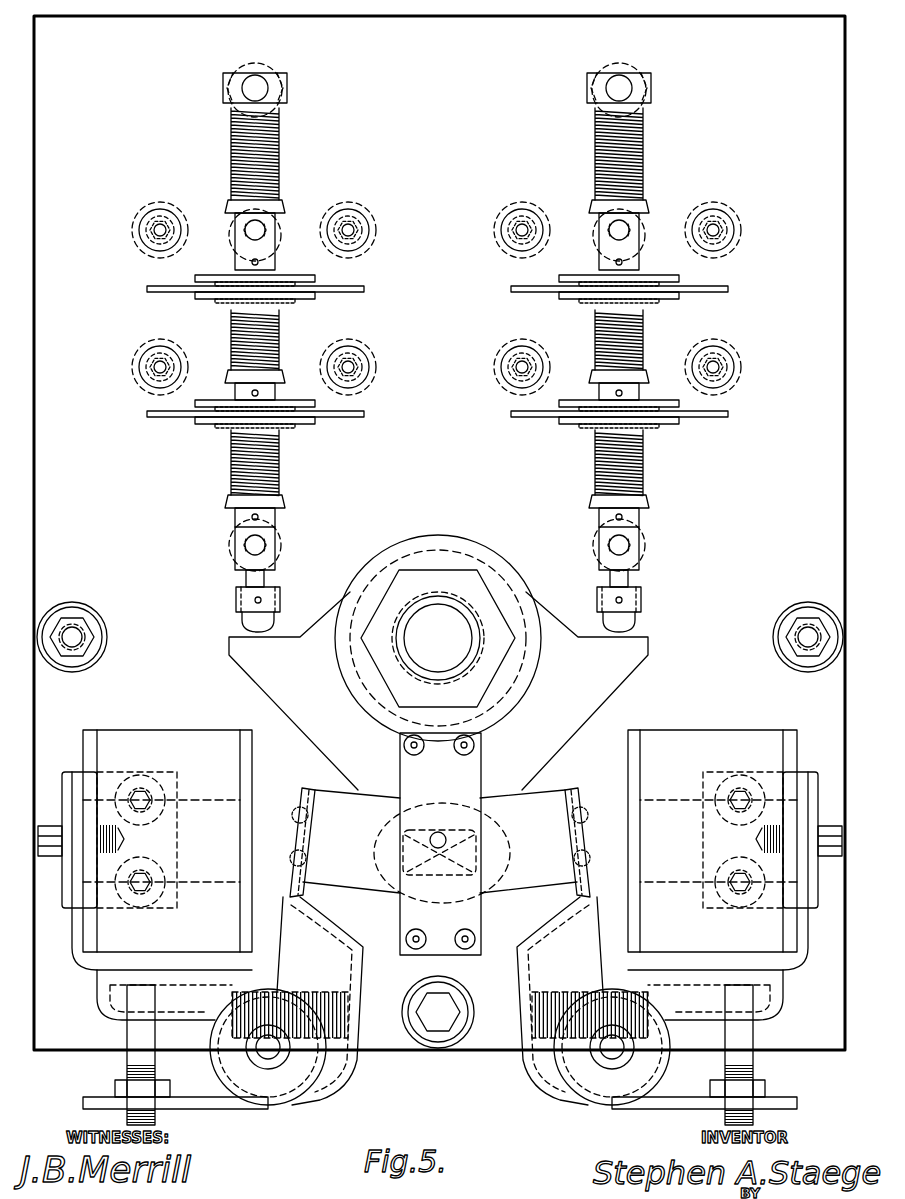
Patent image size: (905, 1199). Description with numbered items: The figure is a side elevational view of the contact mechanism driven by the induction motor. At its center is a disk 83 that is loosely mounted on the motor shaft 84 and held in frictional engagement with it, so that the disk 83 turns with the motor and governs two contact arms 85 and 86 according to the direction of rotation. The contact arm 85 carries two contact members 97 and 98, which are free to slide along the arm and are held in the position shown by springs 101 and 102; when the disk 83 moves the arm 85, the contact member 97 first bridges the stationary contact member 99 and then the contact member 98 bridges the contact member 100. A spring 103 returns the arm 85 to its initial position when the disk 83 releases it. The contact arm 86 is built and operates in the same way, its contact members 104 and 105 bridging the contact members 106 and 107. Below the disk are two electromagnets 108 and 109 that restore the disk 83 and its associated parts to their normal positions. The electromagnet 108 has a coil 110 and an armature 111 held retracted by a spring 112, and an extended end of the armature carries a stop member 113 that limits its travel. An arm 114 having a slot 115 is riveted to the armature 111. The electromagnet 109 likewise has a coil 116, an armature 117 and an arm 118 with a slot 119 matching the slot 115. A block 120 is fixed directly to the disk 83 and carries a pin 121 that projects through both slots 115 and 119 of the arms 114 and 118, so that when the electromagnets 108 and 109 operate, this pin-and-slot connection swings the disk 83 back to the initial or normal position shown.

The disk 83 is at (300, 727).
The shaft 84 is at (438, 612).
The contact arm 85 is at (236, 612).
The contact arm 86 is at (642, 600).
The contact member 97 is at (172, 412).
The contact member 98 is at (172, 284).
The contact member 99 is at (132, 368).
The contact member 100 is at (132, 231).
The spring 101 is at (232, 480).
The spring 102 is at (233, 347).
The spring 103 is at (233, 170).
The contact member 104 is at (512, 413).
The contact member 105 is at (512, 285).
The contact member 106 is at (495, 368).
The contact member 107 is at (497, 226).
The electromagnet 108 is at (80, 1086).
The electromagnet 109 is at (610, 1144).
The coil 110 is at (104, 737).
The armature 111 is at (285, 890).
The spring 112 is at (332, 998).
The stop member 113 is at (128, 1026).
The arm 114 is at (364, 883).
The slot 115 is at (404, 870).
The coil 116 is at (729, 737).
The armature 117 is at (578, 905).
The arm 118 is at (533, 883).
The slot 119 is at (442, 853).
The block 120 is at (428, 985).
The pin 121 is at (436, 836).